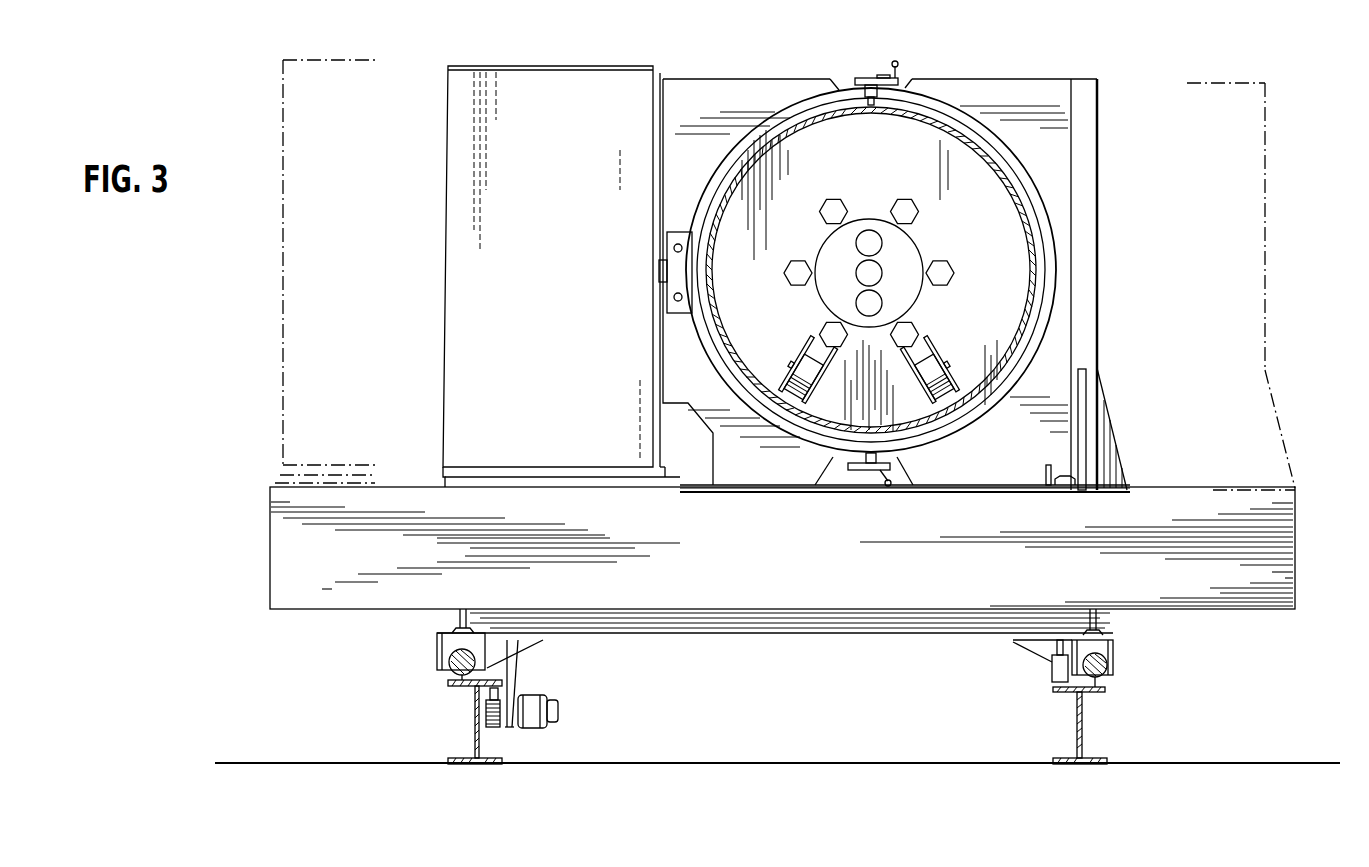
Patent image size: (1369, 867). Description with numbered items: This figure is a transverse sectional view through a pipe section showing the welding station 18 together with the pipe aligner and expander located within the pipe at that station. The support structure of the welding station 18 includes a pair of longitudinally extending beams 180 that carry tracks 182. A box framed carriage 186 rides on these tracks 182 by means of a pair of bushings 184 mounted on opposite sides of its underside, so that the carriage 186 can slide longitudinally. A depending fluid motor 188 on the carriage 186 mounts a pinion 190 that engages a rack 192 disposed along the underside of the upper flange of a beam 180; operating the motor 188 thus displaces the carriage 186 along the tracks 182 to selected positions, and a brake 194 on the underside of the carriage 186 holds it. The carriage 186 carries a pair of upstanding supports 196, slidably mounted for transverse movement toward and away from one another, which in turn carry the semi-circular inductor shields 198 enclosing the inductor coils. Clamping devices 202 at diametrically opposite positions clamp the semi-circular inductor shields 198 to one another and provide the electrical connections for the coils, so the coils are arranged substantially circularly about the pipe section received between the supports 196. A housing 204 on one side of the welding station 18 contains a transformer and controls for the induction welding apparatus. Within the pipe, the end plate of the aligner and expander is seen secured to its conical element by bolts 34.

The welding station 18 is at (350, 278).
The bolts 34 is at (940, 258).
The beams 180 is at (1078, 716).
The tracks 182 is at (1100, 678).
The bushings 184 is at (1100, 661).
The carriage 186 is at (825, 614).
The fluid motor 188 is at (538, 698).
The pinion 190 is at (492, 728).
The rack 192 is at (472, 688).
The brake 194 is at (1052, 672).
The upstanding supports 196 is at (1055, 393).
The inductor shield 198 is at (1054, 233).
The clamping devices 202 is at (866, 78).
The housing 204 is at (450, 227).